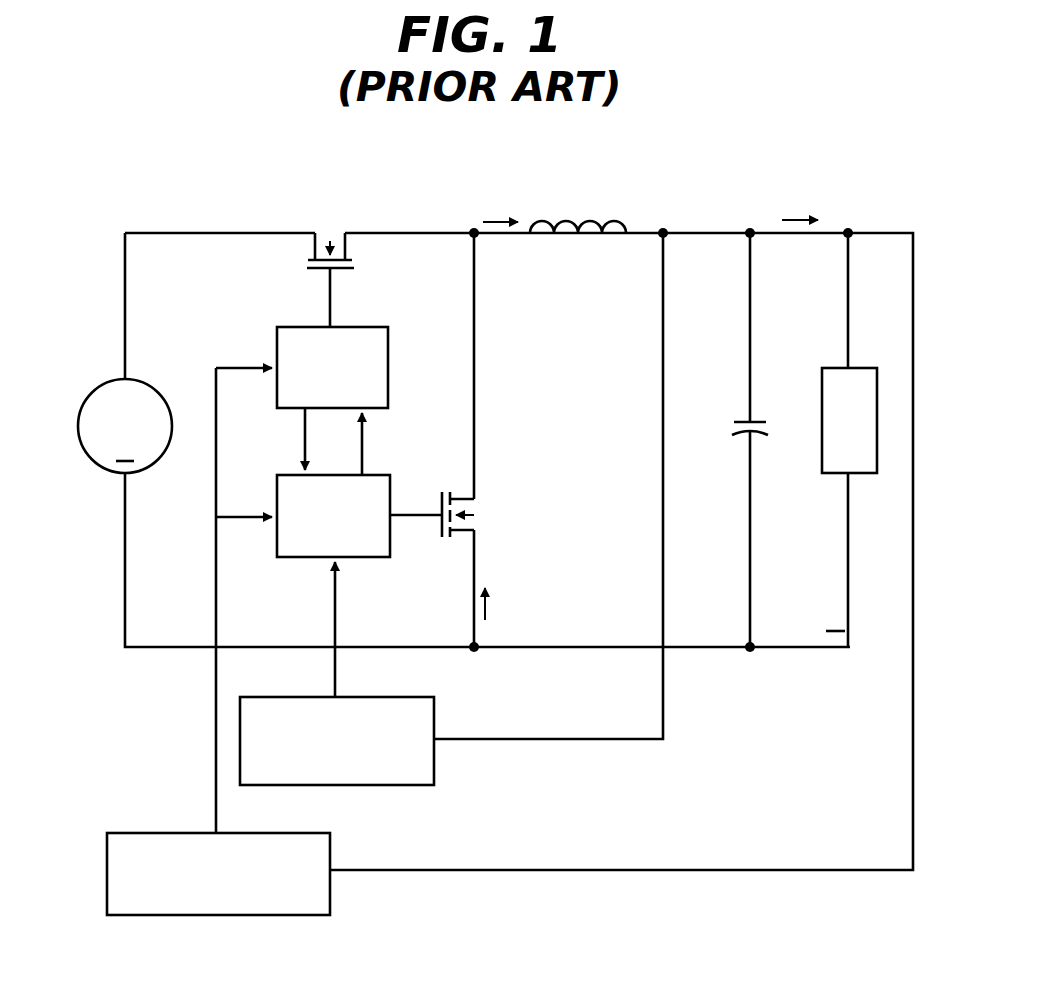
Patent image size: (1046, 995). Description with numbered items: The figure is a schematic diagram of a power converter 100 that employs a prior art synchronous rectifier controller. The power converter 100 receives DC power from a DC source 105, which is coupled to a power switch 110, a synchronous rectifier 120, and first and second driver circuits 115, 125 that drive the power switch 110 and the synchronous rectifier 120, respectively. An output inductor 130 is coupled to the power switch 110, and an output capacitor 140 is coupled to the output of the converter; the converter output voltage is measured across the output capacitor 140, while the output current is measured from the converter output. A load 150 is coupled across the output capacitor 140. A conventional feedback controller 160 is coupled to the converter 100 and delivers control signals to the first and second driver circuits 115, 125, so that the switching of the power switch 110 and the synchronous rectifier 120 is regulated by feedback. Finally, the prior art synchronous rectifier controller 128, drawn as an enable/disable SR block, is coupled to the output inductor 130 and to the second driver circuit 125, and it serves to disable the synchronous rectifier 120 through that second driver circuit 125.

The power converter 100 is at (157, 193).
The DC source 105 is at (82, 408).
The power switch 110 is at (313, 247).
The first driver circuit 115 is at (368, 327).
The synchronous rectifier 120 is at (460, 496).
The second driver circuit 125 is at (372, 558).
The synchronous rectifier controller 128 is at (435, 762).
The output inductor 130 is at (612, 220).
The output capacitor 140 is at (737, 428).
The load 150 is at (822, 465).
The feedback controller 160 is at (330, 895).